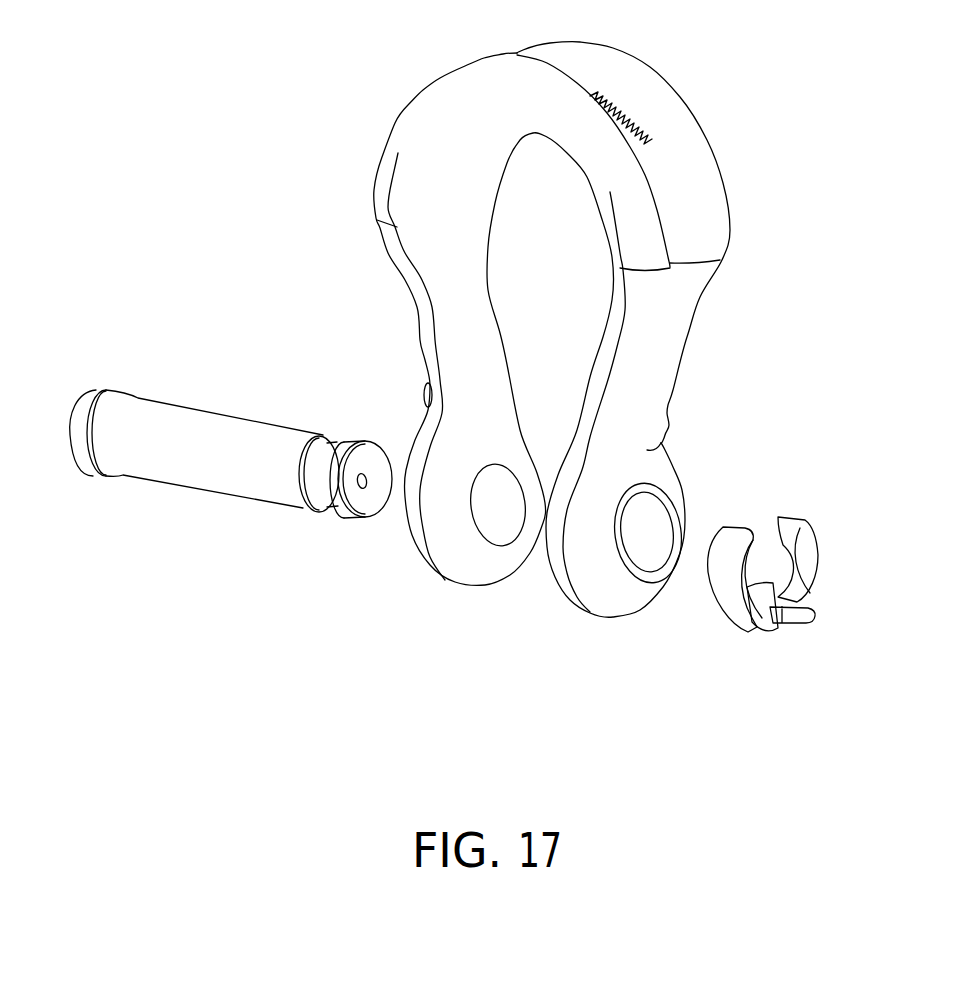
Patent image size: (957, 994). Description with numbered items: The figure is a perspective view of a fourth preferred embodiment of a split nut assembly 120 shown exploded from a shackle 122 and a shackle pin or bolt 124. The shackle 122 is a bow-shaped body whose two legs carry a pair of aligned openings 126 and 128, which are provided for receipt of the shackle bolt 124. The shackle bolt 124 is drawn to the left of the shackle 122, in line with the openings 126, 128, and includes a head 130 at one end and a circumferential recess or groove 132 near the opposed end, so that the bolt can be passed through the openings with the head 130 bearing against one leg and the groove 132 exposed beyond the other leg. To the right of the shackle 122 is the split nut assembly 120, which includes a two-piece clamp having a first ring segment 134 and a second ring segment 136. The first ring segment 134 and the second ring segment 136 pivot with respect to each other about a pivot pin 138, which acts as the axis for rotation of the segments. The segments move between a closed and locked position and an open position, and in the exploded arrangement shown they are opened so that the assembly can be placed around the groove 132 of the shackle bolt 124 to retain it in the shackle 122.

The split nut assembly 120 is at (714, 648).
The shackle 122 is at (680, 331).
The shackle pin or bolt 124 is at (231, 448).
The opening 126 is at (489, 531).
The opening 128 is at (637, 563).
The head 130 is at (103, 385).
The circumferential recess or groove 132 is at (318, 500).
The first ring segment 134 is at (730, 530).
The second ring segment 136 is at (820, 555).
The pivot pin 138 is at (802, 617).